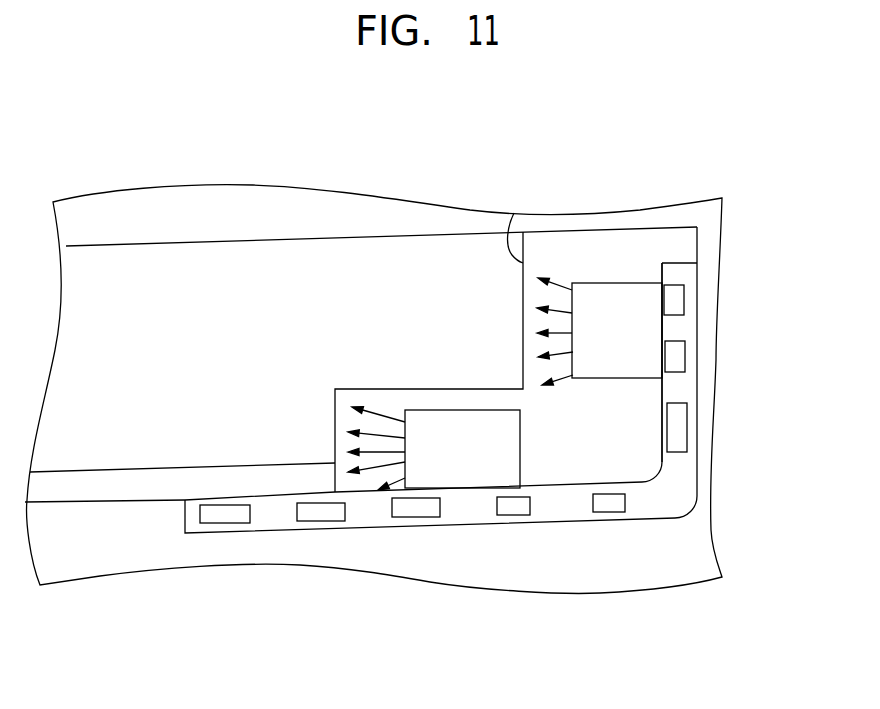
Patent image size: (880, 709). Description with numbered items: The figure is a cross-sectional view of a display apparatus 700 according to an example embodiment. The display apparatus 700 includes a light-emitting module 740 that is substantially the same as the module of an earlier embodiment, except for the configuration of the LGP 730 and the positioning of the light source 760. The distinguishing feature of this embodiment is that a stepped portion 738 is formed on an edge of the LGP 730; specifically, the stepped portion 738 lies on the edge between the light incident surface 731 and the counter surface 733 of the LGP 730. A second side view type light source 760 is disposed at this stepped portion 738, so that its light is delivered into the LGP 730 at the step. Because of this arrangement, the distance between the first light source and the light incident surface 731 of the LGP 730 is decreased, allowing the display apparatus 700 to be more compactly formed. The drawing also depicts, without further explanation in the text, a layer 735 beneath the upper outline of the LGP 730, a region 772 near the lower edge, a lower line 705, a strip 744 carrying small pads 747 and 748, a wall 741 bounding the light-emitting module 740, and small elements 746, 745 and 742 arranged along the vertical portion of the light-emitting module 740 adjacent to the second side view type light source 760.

The display apparatus 700 is at (405, 121).
The LGP 730 is at (212, 272).
The upper substrate 735 is at (288, 238).
The stepped portion 738 is at (368, 388).
The light incident surface 731 is at (514, 213).
The counter surface 733 is at (75, 467).
The adhesive layer 772 is at (130, 490).
The lower support line 705 is at (287, 558).
The flexible circuit strip 744 is at (363, 520).
The connection pad 747 is at (512, 508).
The connection pad 748 is at (602, 505).
The light-emitting module 740 is at (797, 283).
The light emitting element 746 is at (684, 300).
The light emitting element 745 is at (685, 355).
The light emitting element 742 is at (680, 392).
The second side view type light source 760 is at (512, 458).
The housing wall 741 is at (700, 488).